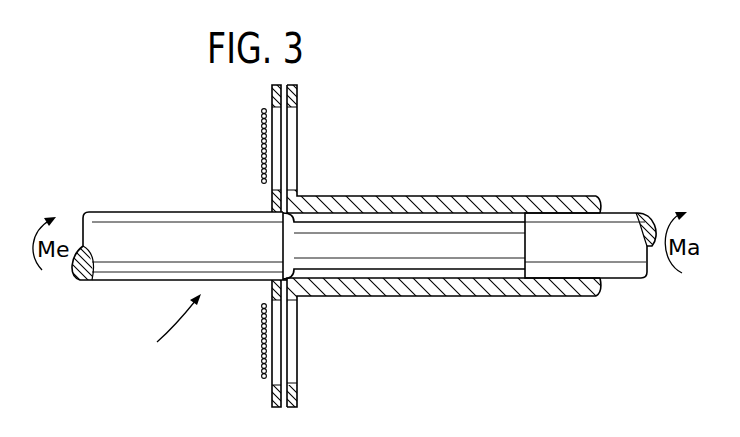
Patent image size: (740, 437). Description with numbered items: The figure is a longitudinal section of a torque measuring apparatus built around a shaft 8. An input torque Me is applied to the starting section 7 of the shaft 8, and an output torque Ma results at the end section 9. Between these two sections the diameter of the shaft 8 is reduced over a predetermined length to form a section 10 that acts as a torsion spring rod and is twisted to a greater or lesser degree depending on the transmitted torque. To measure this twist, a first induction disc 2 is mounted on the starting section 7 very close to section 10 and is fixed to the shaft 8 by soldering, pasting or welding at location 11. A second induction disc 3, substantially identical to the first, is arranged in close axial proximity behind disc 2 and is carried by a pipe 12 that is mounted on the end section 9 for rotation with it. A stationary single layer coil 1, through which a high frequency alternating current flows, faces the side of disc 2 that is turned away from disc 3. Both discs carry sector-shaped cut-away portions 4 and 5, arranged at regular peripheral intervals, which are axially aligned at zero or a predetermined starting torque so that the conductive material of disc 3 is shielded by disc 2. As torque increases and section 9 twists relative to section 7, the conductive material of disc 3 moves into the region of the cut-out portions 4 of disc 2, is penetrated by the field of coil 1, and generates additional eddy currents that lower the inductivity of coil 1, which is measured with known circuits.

The single layer coil 1 is at (262, 133).
The first induction disc 2 is at (273, 92).
The second induction disc 3 is at (292, 98).
The sector-shaped cut-away portions 4 is at (276, 148).
The sector-shaped cut-out portions of disc 3 5 is at (293, 173).
The starting section of shaft 7 is at (172, 233).
The shaft 8 is at (171, 328).
The end section of shaft 9 is at (614, 233).
The torsion spring rod section 10 is at (398, 246).
The connection location 11 is at (271, 284).
The pipe 12 is at (458, 206).